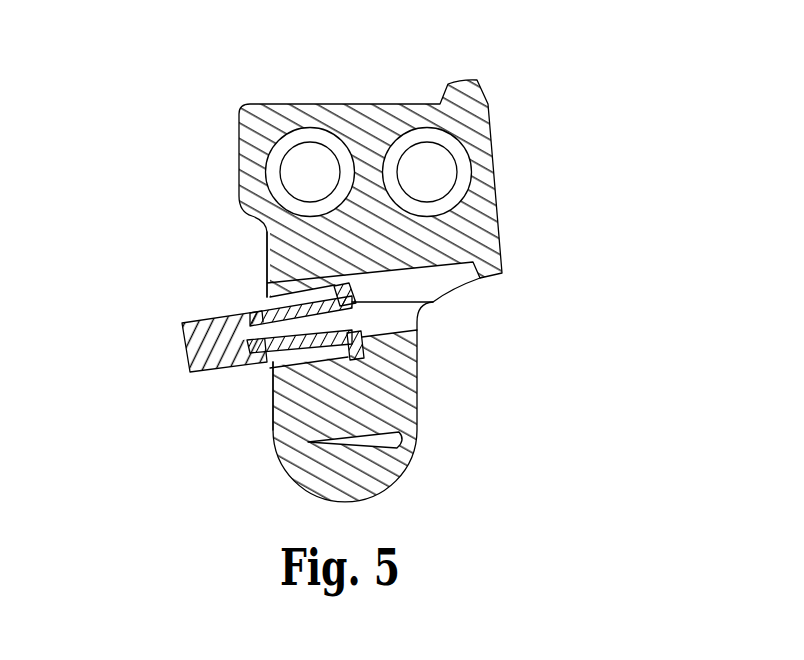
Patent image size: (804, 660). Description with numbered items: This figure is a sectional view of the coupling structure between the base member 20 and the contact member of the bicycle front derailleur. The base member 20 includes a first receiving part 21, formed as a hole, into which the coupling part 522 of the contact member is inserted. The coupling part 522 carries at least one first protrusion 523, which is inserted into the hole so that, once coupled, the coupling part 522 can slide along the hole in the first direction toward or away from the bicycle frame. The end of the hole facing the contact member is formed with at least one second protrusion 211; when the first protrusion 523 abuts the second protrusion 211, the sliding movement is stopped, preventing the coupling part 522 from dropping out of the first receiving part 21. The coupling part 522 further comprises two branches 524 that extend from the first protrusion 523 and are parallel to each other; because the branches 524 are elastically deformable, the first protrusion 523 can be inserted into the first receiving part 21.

The base member 20 is at (496, 174).
The first receiving part 21 is at (398, 332).
The second protrusion 211 is at (266, 258).
The coupling part 522 is at (183, 332).
The first protrusion 523 is at (432, 304).
The branches 524 is at (268, 298).